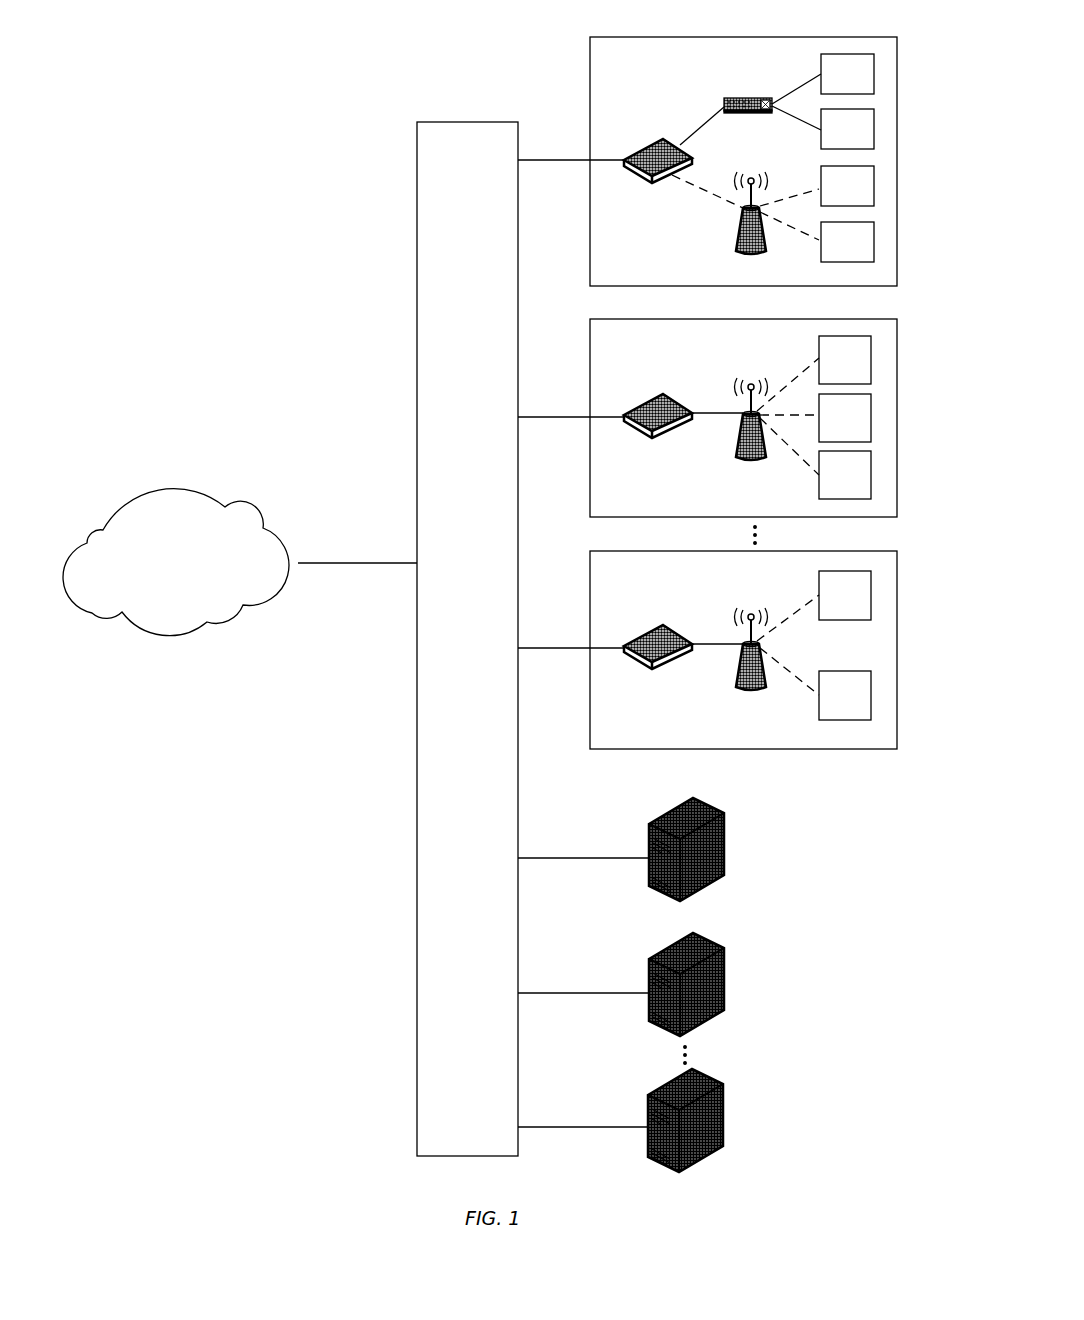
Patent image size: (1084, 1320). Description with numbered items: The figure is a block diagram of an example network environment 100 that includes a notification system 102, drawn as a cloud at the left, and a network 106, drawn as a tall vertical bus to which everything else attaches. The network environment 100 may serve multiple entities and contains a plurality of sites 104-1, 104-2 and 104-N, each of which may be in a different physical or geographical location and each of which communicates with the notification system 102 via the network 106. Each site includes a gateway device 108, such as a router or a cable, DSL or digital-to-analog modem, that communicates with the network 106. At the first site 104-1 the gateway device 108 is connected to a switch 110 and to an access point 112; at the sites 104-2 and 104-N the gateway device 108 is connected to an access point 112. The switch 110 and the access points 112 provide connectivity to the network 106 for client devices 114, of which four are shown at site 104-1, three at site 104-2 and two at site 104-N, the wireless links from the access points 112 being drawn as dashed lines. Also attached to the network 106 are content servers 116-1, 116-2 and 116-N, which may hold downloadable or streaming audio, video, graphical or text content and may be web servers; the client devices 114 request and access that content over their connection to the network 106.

The network environment 100 is at (126, 126).
The notification system 102 is at (188, 573).
The site 104-1 is at (897, 57).
The site 104-2 is at (897, 340).
The site 104-N is at (897, 571).
The network 106 is at (518, 124).
The gateway device 108 is at (662, 137).
The switch 110 is at (722, 103).
The access point 112 is at (752, 256).
The client device 114 is at (863, 85).
The content server 116-1 is at (724, 828).
The content server 116-2 is at (724, 963).
The content server 116-N is at (723, 1103).